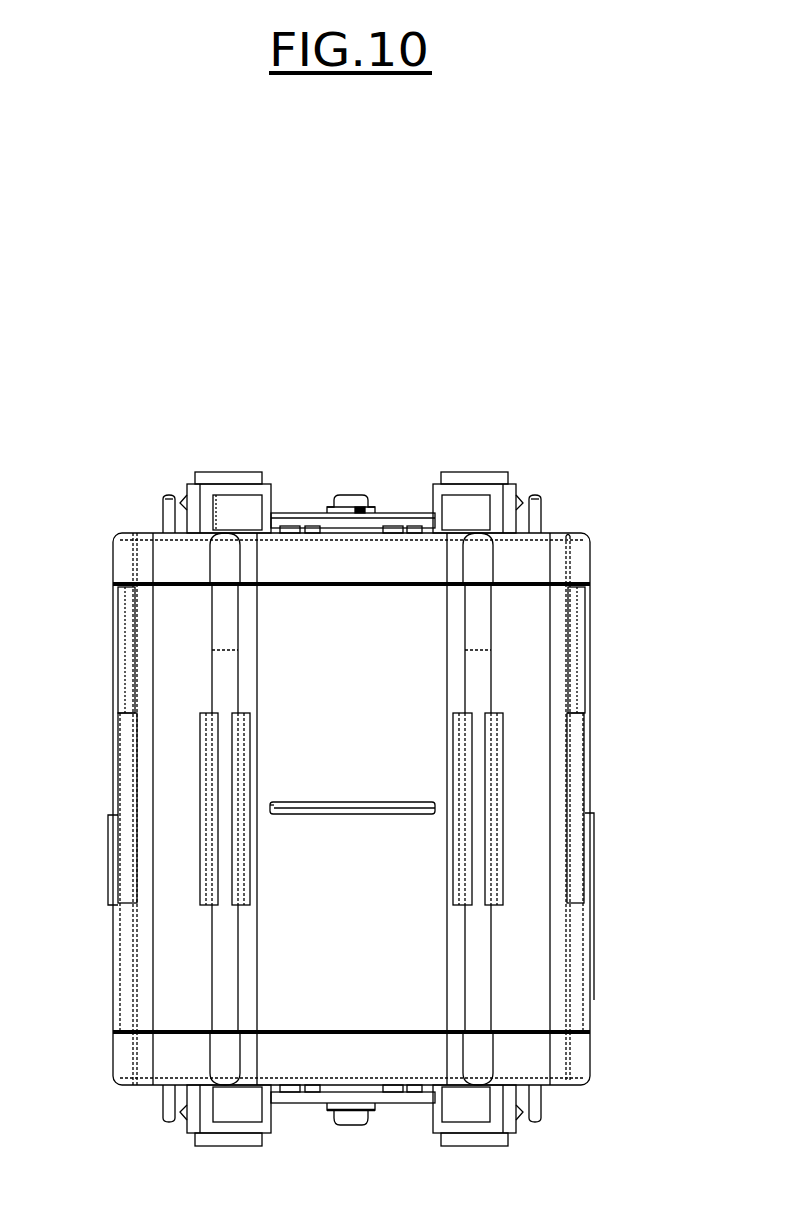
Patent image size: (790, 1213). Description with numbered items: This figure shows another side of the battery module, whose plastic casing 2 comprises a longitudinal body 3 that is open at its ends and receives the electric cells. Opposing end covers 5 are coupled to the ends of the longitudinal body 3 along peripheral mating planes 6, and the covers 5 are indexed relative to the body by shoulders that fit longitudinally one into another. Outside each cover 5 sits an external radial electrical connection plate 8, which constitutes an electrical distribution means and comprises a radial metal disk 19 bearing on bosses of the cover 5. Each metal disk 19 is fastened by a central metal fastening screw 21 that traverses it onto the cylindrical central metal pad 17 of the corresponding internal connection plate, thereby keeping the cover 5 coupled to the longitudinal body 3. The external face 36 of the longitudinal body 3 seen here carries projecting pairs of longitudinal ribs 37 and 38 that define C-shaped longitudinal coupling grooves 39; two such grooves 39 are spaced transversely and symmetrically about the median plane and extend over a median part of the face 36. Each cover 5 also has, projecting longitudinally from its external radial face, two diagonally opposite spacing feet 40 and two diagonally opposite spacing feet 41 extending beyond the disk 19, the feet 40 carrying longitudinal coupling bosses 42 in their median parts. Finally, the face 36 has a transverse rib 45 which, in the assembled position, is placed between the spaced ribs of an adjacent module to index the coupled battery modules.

The casing 2 is at (612, 692).
The longitudinal body 3 is at (604, 980).
The end cover 5 is at (598, 524).
The peripheral mating plane 6 is at (564, 582).
The external radial electrical connection plate 8 is at (421, 500).
The cylindrical central metal pad 17 is at (317, 528).
The radial metal disk 19 is at (300, 517).
The central metal fastening screw 21 is at (343, 498).
The external opposite face 36 is at (172, 667).
The longitudinal rib 37 is at (495, 777).
The longitudinal rib 38 is at (458, 857).
The longitudinal coupling groove 39 is at (478, 822).
The spacing foot 40 is at (188, 500).
The spacing foot 41 is at (512, 490).
The longitudinal coupling boss 42 is at (224, 472).
The transverse rib 45 is at (305, 810).